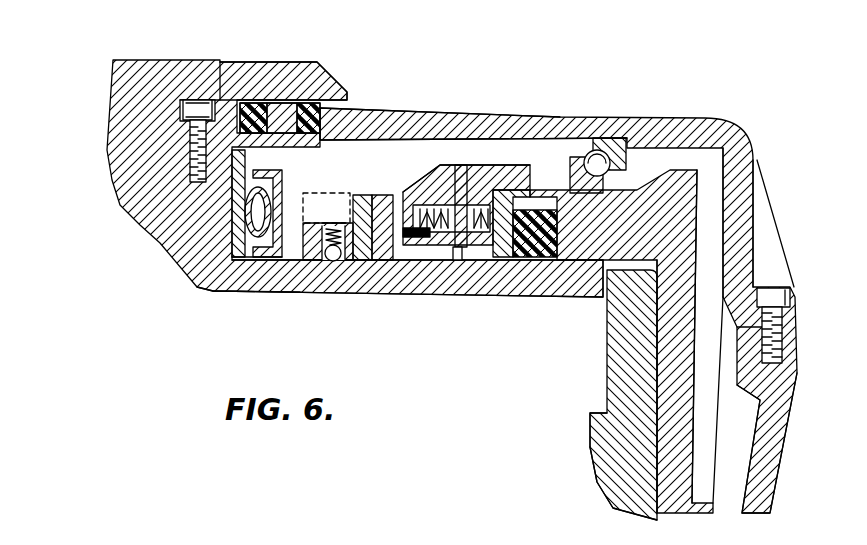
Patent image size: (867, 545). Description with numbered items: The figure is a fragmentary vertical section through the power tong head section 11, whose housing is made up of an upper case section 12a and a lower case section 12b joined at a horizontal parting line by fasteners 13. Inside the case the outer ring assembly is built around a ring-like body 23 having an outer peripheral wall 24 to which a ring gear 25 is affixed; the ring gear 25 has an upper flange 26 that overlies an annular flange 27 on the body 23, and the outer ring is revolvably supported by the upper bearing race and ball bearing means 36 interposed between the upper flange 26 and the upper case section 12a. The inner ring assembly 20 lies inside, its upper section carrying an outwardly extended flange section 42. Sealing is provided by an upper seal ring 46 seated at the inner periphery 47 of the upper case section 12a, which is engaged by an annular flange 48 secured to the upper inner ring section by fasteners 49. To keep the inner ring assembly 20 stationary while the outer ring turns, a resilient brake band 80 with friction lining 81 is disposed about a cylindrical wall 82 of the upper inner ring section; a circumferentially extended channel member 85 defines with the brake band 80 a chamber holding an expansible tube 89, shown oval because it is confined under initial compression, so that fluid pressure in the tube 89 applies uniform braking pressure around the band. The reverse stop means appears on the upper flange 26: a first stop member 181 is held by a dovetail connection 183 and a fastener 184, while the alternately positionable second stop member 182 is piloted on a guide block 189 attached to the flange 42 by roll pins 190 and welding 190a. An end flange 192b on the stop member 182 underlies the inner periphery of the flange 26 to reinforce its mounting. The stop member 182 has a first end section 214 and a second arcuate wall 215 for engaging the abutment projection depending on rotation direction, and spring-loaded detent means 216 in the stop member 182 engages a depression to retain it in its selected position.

The power tong assembly head section 11 is at (720, 115).
The upper case section 12a is at (755, 170).
The lower case section 12b is at (768, 455).
The fasteners 13 is at (773, 288).
The inner ring assembly 20 is at (183, 280).
The ring-like body 23 is at (602, 433).
The outer peripheral wall 24 is at (657, 380).
The ring gear 25 is at (673, 457).
The upper flange 26 is at (520, 172).
The annular flange 27 is at (630, 297).
The upper bearing race and ball bearing means 36 is at (603, 140).
The outwardly extended flange section 42 is at (568, 292).
The upper seal ring 46 is at (251, 118).
The inner periphery 47 is at (340, 118).
The annular flange 48 is at (312, 77).
The fasteners 49 is at (196, 99).
The brake band 80 is at (213, 281).
The friction lining 81 is at (231, 236).
The cylindrical wall 82 is at (232, 211).
The channel member 85 is at (258, 238).
The expansible tube 89 is at (243, 260).
The first stop member 181 is at (433, 167).
The second stop member 182 is at (317, 259).
The dovetail connection 183 is at (460, 163).
The fastener 184 is at (478, 259).
The guide block 189 is at (390, 197).
The roll pins 190 is at (372, 262).
The welding 190a is at (388, 263).
The end flange 192b is at (457, 262).
The first end section 214 is at (350, 195).
The second arcuate wall 215 is at (311, 194).
The spring-loaded detent means 216 is at (335, 262).